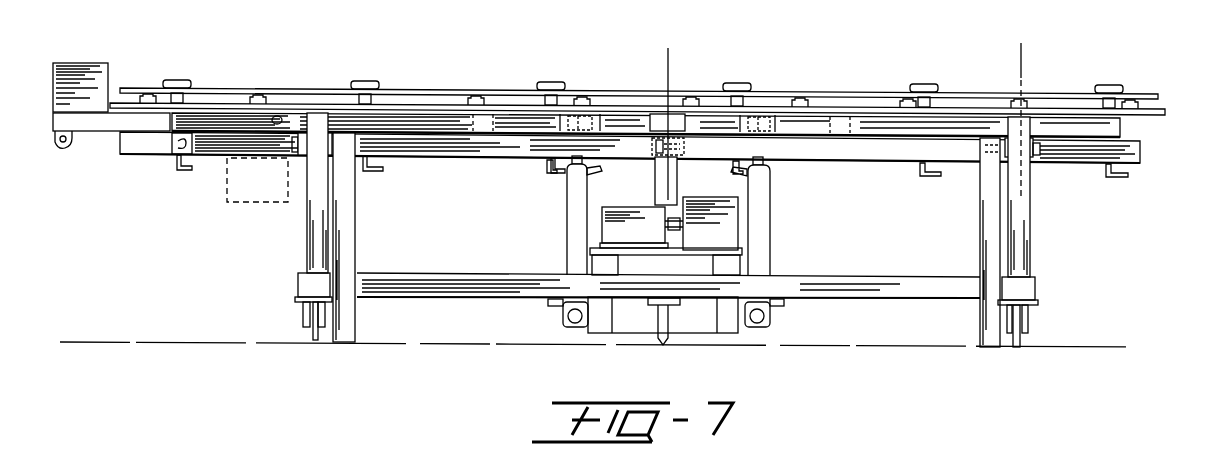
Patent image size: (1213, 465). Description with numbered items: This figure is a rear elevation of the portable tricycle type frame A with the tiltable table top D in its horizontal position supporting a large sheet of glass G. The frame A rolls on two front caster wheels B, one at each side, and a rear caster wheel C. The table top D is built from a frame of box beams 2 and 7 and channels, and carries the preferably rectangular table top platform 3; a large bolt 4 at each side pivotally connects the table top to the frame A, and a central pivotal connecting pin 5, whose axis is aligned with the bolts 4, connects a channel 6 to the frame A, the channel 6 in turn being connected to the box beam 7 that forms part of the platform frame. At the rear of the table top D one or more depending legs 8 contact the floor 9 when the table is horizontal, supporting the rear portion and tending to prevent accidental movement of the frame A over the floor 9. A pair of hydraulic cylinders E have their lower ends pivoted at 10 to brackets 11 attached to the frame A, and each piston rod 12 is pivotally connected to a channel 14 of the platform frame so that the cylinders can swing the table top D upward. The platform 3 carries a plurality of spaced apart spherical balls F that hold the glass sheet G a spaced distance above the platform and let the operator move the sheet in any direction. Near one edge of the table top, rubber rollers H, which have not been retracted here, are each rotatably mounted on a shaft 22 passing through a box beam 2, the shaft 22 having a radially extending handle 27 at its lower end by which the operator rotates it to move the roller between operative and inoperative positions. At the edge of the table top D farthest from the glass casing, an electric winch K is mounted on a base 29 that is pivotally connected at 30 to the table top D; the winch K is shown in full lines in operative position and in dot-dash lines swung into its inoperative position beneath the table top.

The box beam 2 is at (284, 130).
The table top platform 3 is at (1167, 114).
The bolt 4 is at (985, 150).
The central pivotal connecting pin 5 is at (678, 148).
The channel 6 is at (650, 141).
The box beam 7 is at (658, 125).
The depending leg 8 is at (358, 313).
The floor 9 is at (1089, 346).
The pivot 10 is at (647, 67).
The bracket 11 is at (1000, 70).
The piston rod 12 is at (569, 167).
The channel 14 is at (590, 118).
The shaft 22 is at (1105, 168).
The handle 27 is at (1124, 177).
The base 29 is at (100, 125).
The pivotal connection 30 is at (182, 153).
The portable tricycle type frame A is at (305, 220).
The front caster wheel B is at (302, 320).
The rear caster wheel C is at (663, 345).
The tiltable table top D is at (452, 138).
The hydraulic cylinder E is at (566, 214).
The spherical balls F is at (487, 97).
The sheet of glass G is at (283, 86).
The rubber roller H is at (175, 79).
The electric winch K is at (102, 60).